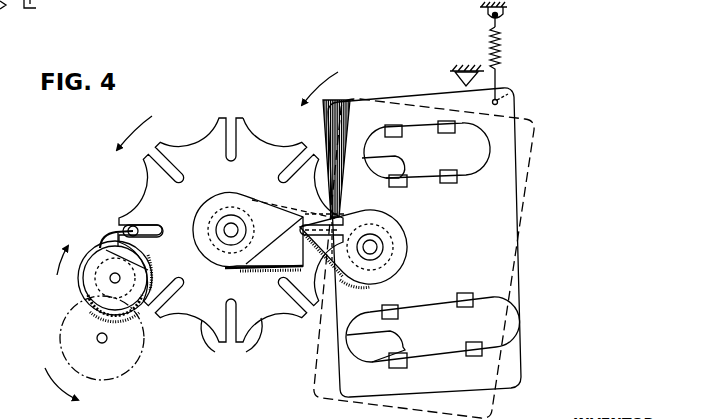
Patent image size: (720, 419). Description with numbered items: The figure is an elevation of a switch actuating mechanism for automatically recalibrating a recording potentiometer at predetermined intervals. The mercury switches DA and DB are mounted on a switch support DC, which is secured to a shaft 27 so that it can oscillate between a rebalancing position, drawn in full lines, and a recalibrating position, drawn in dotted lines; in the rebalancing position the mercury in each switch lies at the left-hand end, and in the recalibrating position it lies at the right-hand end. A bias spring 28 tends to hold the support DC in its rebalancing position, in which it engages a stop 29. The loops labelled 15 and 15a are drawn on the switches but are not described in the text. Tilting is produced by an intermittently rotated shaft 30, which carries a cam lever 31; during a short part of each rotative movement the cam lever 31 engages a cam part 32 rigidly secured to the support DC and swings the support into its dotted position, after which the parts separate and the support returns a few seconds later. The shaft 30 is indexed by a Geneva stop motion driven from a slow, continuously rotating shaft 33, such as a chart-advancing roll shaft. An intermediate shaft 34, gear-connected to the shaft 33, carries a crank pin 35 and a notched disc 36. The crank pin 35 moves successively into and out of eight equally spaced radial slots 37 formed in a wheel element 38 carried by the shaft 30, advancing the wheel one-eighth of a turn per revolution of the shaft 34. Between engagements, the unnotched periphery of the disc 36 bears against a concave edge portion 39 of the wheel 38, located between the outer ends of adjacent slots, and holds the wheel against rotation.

The wheel element 38 is at (222, 128).
The concave edge portion 39 is at (231, 342).
The shaft 30 is at (231, 222).
The cam lever 31 is at (258, 196).
The intermediate shaft 34 is at (113, 278).
The continuously rotating shaft 33 is at (97, 338).
The notched disc 36 is at (107, 248).
The crank pin 35 is at (129, 229).
The radial slot 37 is at (146, 224).
The shaft 27 is at (373, 240).
The cam part 32 is at (392, 268).
The switch DB is at (458, 183).
The inner belt loop 15a is at (406, 171).
The switch DA is at (484, 295).
The inner belt loop 15 is at (405, 348).
The switch support DC is at (517, 245).
The bias spring 28 is at (500, 56).
The stop 29 is at (455, 76).